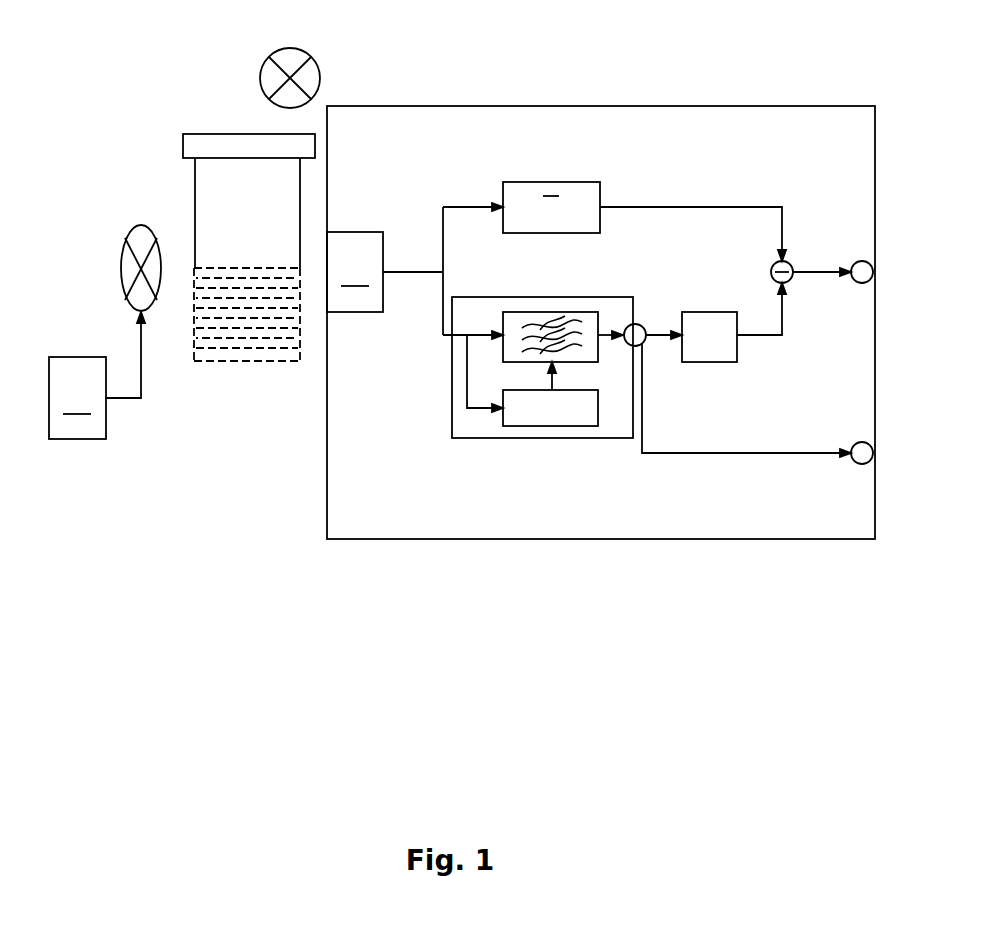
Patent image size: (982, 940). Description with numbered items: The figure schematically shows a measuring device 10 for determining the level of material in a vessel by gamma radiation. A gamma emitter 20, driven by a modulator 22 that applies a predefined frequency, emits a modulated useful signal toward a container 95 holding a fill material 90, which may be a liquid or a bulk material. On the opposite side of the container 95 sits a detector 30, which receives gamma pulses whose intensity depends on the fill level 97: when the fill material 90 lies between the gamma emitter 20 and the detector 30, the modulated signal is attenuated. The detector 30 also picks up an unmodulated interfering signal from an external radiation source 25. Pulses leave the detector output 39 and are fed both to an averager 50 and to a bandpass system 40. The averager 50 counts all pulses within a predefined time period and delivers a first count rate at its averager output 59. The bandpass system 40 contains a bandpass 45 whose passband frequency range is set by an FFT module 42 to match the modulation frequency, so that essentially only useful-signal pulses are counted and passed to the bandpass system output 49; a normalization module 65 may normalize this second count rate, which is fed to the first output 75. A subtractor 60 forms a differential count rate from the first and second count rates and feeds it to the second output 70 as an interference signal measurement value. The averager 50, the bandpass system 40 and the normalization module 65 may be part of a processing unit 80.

The measuring device 10 is at (508, 60).
The gamma emitter 20 is at (134, 227).
The modulator 22 is at (97, 375).
The external radiation source 25 is at (260, 80).
The detector 30 is at (355, 272).
The detector output 39 is at (395, 255).
The bandpass system 40 is at (588, 438).
The FFT module 42 is at (550, 394).
The bandpass 45 is at (540, 312).
The bandpass system output 49 is at (649, 316).
The averager 50 is at (555, 182).
The averager output 59 is at (614, 191).
The subtractor 60 is at (791, 279).
The normalization module 65 is at (708, 362).
The second output 70 is at (858, 261).
The first output 75 is at (855, 442).
The processing unit 80 is at (710, 181).
The fill material 90 is at (243, 326).
The container 95 is at (237, 362).
The fill level 97 is at (247, 267).